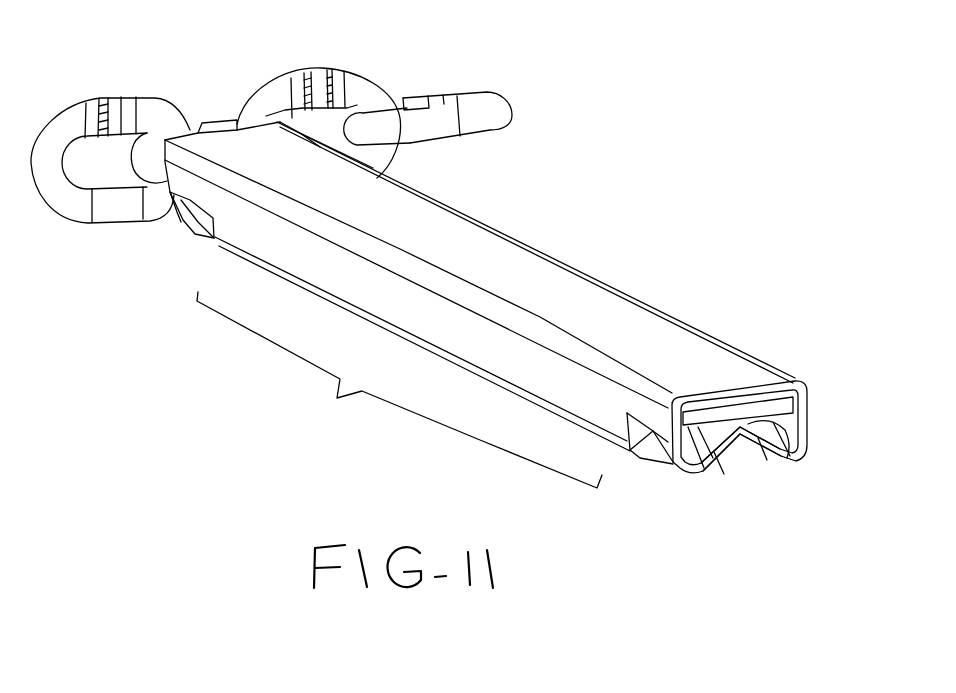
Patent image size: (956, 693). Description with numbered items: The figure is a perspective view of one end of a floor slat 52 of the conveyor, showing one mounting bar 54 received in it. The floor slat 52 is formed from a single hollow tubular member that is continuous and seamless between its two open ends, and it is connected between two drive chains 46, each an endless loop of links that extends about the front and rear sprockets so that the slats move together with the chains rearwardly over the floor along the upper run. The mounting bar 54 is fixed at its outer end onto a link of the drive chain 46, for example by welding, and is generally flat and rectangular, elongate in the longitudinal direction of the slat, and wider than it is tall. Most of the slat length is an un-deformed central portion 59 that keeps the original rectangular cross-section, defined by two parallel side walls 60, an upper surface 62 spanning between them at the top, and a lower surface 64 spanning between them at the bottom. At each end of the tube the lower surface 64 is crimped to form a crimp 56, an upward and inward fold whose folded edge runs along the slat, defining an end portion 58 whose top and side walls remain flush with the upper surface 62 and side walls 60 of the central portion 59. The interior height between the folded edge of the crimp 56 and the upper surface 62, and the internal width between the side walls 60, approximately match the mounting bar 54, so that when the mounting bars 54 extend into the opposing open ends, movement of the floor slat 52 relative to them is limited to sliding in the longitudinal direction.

The drive chain 46 is at (353, 82).
The floor slat 52 is at (604, 244).
The mounting bar 54 is at (767, 408).
The crimp 56 is at (740, 436).
The end portion 58 is at (184, 237).
The central portion 59 is at (416, 324).
The side wall 60 is at (653, 414).
The upper surface 62 is at (522, 271).
The lower surface 64 is at (490, 385).